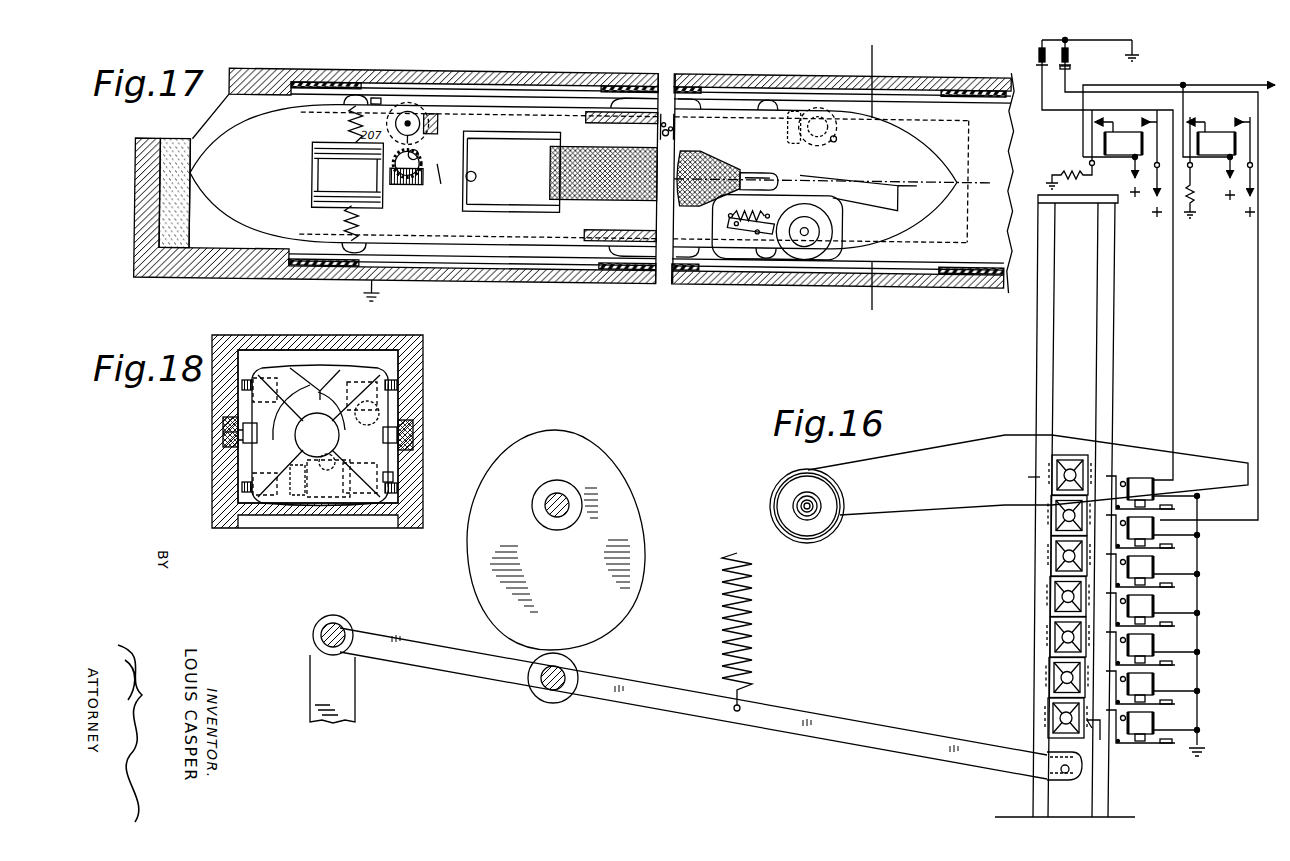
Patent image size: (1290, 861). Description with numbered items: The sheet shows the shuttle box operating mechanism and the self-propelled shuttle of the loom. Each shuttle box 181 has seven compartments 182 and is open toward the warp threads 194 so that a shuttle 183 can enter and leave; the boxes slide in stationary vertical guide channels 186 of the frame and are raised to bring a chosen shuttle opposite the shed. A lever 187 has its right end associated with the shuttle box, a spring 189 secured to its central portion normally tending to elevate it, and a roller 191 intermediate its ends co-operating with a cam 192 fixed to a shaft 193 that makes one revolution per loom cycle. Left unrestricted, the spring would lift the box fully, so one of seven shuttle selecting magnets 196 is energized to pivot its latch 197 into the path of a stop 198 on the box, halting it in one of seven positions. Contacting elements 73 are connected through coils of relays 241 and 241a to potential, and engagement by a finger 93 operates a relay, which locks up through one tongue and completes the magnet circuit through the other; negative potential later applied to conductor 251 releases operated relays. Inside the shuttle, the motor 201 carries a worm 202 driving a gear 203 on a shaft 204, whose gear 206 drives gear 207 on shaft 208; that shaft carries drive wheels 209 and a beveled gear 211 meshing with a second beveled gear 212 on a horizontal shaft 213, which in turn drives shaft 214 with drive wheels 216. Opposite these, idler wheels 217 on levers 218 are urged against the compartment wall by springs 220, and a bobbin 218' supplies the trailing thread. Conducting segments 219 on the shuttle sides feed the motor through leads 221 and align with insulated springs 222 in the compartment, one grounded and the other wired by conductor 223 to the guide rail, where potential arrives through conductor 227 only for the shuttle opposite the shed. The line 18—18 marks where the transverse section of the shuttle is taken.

In FIG. 17, the section line 18- 18 is at (840, 58).
In FIG. 16, the contacting elements 73 is at (1070, 75).
In FIG. 16, the fingers 93 is at (1037, 57).
In FIG. 17, the shuttle box 181 is at (538, 56).
In FIG. 18, the shuttle box 181 is at (426, 381).
In FIG. 16, the shuttle box 181 is at (1072, 450).
In FIG. 17, the compartment 182 is at (267, 238).
In FIG. 18, the compartment 182 is at (387, 362).
In FIG. 17, the shuttle 183 is at (263, 203).
In FIG. 18, the shuttle 183 is at (356, 359).
In FIG. 16, the shuttle 183 is at (328, 638).
In FIG. 16, the vertical guide channels 186 is at (1105, 343).
In FIG. 16, the lever 187 is at (870, 737).
In FIG. 16, the spring 189 is at (753, 643).
In FIG. 16, the roller 191 is at (552, 703).
In FIG. 16, the cam 192 is at (625, 515).
In FIG. 16, the shaft 193 is at (558, 490).
In FIG. 16, the warp threads 194 is at (931, 447).
In FIG. 16, the shuttle selecting magnets 196 is at (1147, 567).
In FIG. 16, the latches 197 is at (1150, 722).
In FIG. 16, the stop 198 is at (1092, 728).
In FIG. 17, the motor 201 is at (312, 164).
In FIG. 18, the motor 201 is at (311, 412).
In FIG. 17, the worm 202 is at (407, 177).
In FIG. 18, the worm 202 is at (300, 470).
In FIG. 17, the gear 203 is at (418, 153).
In FIG. 18, the gear 203 is at (323, 470).
In FIG. 17, the shaft 204 is at (347, 175).
In FIG. 17, the gear 206 is at (437, 160).
In FIG. 18, the gear 206 is at (350, 482).
In FIG. 18, the gear 207 is at (391, 477).
In FIG. 18, the shaft 208 is at (383, 450).
In FIG. 17, the drive wheels 209 is at (409, 99).
In FIG. 18, the drive wheels 209 is at (400, 382).
In FIG. 17, the beveled gear 211 is at (436, 107).
In FIG. 18, the beveled gear 211 is at (317, 435).
In FIG. 17, the second beveled gear 212 is at (440, 113).
In FIG. 18, the second beveled gear 212 is at (387, 410).
In FIG. 17, the horizontal shaft 213 is at (662, 131).
In FIG. 17, the shaft 214 is at (836, 139).
In FIG. 17, the drive wheels 216 is at (808, 110).
In FIG. 17, the idler wheels 217 is at (400, 248).
In FIG. 18, the idler wheels 217 is at (244, 384).
In FIG. 17, the levers 218 is at (759, 223).
In FIG. 17, the bobbin 218' is at (861, 182).
In FIG. 17, the conducting segments 219 is at (585, 110).
In FIG. 18, the conducting segments 219 is at (402, 443).
In FIG. 17, the springs 220 is at (727, 205).
In FIG. 18, the springs 220 is at (305, 452).
In FIG. 17, the leads 221 is at (348, 119).
In FIG. 17, the springs 222 is at (673, 107).
In FIG. 18, the springs 222 is at (410, 421).
In FIG. 17, the conductor 223 is at (375, 99).
In FIG. 18, the conductor 227 is at (223, 436).
In FIG. 16, the conductor 227 is at (1025, 482).
In FIG. 16, the relay 241 is at (1122, 132).
In FIG. 16, the relay 241a is at (1225, 132).
In FIG. 16, the conductor 251 is at (1179, 110).